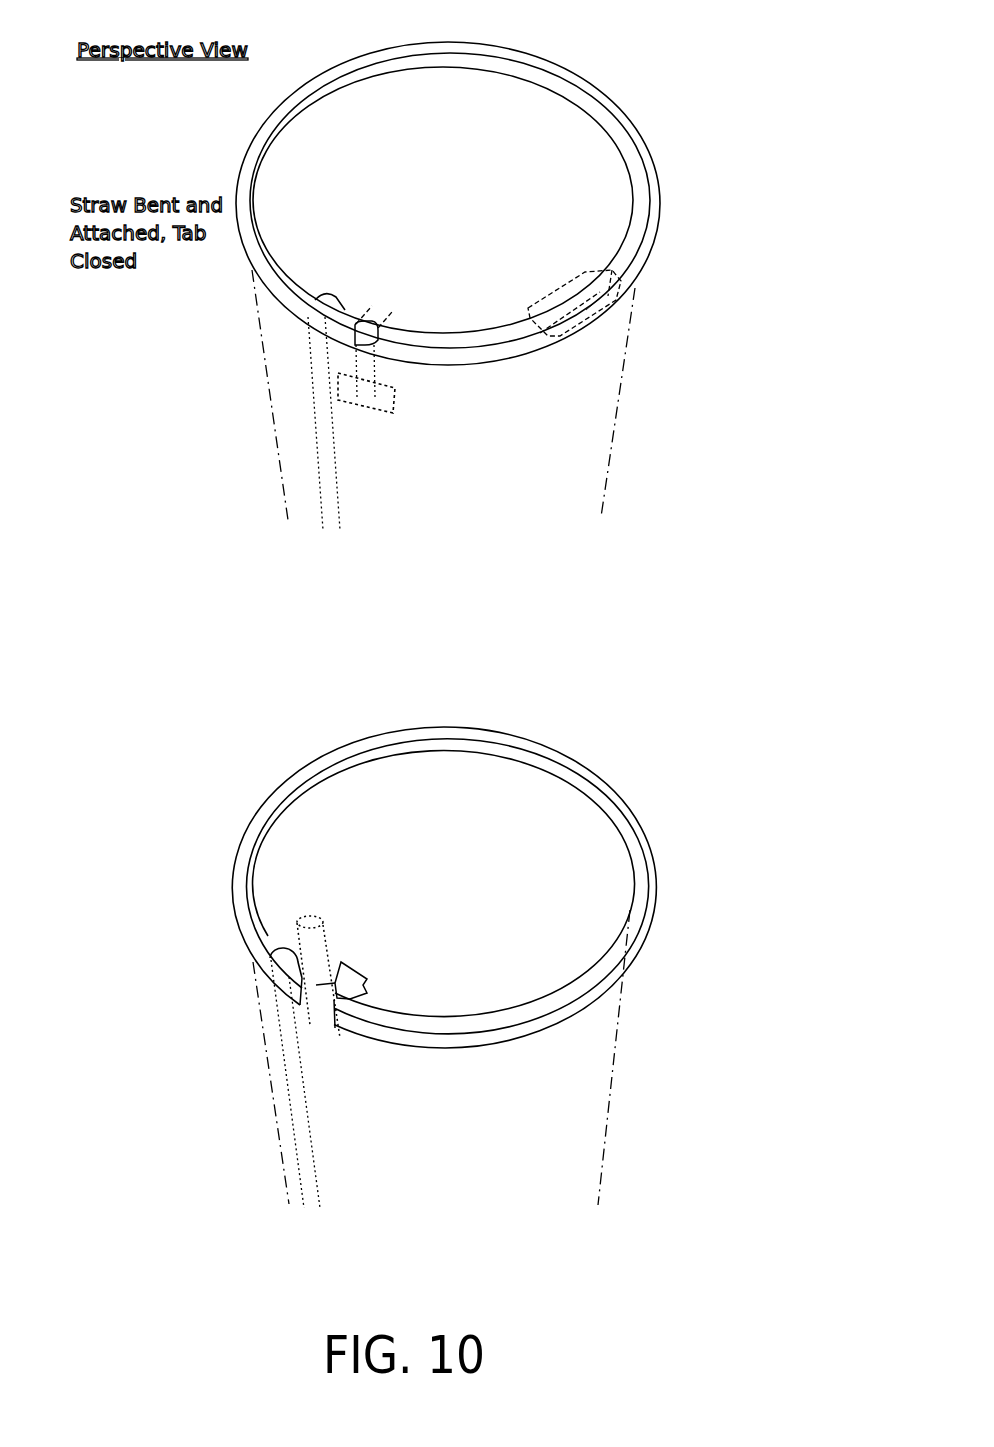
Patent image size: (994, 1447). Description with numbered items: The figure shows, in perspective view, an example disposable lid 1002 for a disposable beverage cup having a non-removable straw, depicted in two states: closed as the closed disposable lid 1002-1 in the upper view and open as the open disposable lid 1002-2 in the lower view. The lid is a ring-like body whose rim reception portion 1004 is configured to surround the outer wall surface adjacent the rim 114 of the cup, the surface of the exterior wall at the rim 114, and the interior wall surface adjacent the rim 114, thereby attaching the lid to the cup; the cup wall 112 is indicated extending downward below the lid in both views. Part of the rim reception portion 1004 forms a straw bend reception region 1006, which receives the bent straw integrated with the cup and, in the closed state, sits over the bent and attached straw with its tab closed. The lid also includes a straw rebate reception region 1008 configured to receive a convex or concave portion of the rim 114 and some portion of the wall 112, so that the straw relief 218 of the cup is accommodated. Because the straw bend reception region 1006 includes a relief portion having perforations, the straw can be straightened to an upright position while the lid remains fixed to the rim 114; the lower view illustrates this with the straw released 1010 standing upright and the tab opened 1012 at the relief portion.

The disposable lid 1002 is at (531, 182).
The closed disposable lid 1002-1 is at (524, 203).
The open disposable lid 1002-2 is at (517, 887).
The rim reception portion 1004 is at (550, 73).
The straw bend reception region 1006 is at (382, 333).
The straw rebate reception region 1008 is at (275, 960).
The straw released 1010 is at (310, 900).
The tab opened 1012 is at (365, 992).
The wall 112 is at (262, 350).
The rim 114 is at (586, 308).
The straw relief 218 is at (125, 1170).